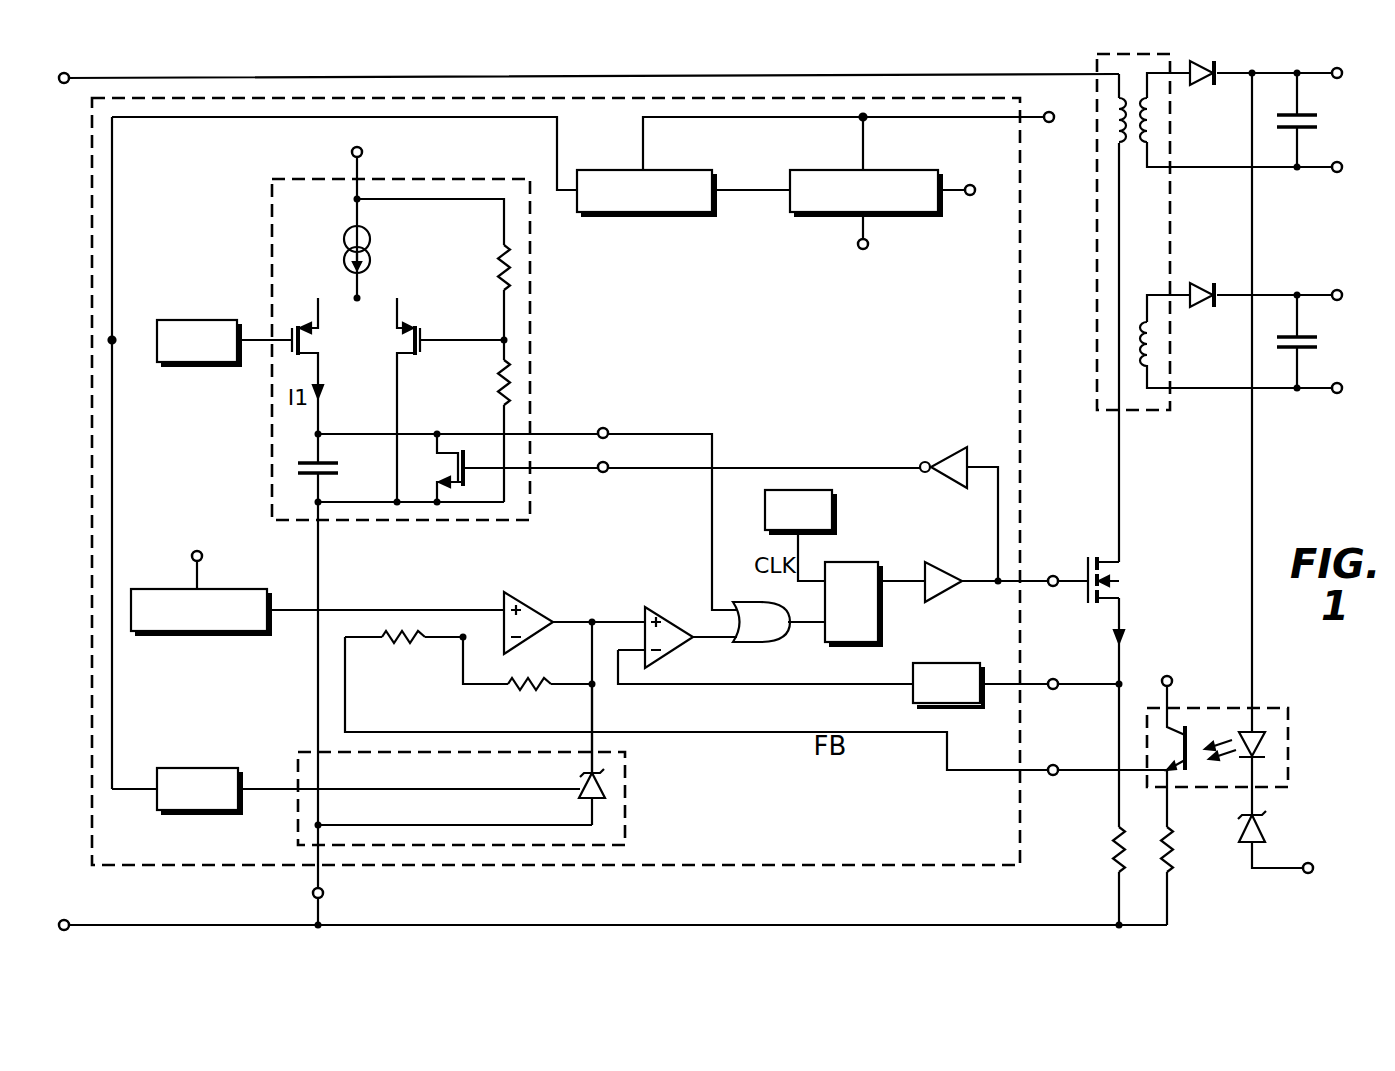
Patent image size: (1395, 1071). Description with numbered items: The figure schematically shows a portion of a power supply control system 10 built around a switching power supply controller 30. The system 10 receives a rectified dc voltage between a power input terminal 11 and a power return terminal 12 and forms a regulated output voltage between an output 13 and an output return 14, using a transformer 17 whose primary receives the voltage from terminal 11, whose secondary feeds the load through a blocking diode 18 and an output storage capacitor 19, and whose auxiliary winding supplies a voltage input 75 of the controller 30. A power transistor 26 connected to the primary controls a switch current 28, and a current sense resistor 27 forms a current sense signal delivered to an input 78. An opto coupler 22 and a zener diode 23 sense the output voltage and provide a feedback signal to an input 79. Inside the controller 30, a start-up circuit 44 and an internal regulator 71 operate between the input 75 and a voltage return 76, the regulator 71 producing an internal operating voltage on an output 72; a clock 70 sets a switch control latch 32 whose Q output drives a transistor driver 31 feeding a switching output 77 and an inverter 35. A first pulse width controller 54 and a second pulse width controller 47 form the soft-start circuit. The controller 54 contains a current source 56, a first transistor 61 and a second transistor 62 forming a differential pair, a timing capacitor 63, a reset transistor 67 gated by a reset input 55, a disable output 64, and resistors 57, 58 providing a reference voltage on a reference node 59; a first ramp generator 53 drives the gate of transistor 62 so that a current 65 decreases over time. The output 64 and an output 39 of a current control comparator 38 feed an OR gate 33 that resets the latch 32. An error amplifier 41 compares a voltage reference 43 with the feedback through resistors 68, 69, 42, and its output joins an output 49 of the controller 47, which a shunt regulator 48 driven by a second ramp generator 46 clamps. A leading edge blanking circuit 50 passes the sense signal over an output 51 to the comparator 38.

The power supply control system 10 is at (1318, 499).
The power input terminal 11 is at (64, 84).
The power return terminal 12 is at (64, 920).
The output 13 is at (1343, 73).
The output return 14 is at (1343, 167).
The transformer 17 is at (1170, 220).
The blocking diode 18 is at (1203, 90).
The output storage capacitor 19 is at (1320, 121).
The opto coupler 22 is at (1288, 733).
The zener diode 23 is at (1244, 842).
The power transistor 26 is at (1124, 574).
The current sense resistor 27 is at (1112, 851).
The switch current 28 is at (1123, 640).
The switching power supply controller 30 is at (1020, 330).
The transistor driver 31 is at (945, 572).
The switch control latch 32 is at (862, 562).
The OR gate 33 is at (776, 640).
The inverter 35 is at (948, 452).
The current control comparator 38 is at (666, 616).
The output of comparator 39 is at (712, 645).
The error amplifier 41 is at (530, 608).
The resistor 42 is at (1178, 850).
The voltage reference 43 is at (197, 635).
The start-up circuit 44 is at (645, 216).
The second ramp generator 46 is at (197, 767).
The second pulse width controller 47 is at (625, 825).
The shunt regulator 48 is at (605, 785).
The output of second pulse width controller 49 is at (594, 708).
The leading edge blanking circuit 50 is at (955, 663).
The output of LEB 51 is at (750, 690).
The first ramp generator 53 is at (197, 319).
The first pulse width controller 54 is at (272, 228).
The reset input 55 is at (603, 473).
The current source 56 is at (372, 250).
The resistor 57 is at (497, 256).
The resistor 58 is at (496, 406).
The reference node 59 is at (497, 345).
The first transistor 61 is at (422, 324).
The second transistor 62 is at (292, 322).
The timing capacitor 63 is at (340, 470).
The disable output 64 is at (603, 427).
The current 65 is at (322, 392).
The reset transistor 67 is at (438, 468).
The resistor 68 is at (548, 681).
The resistor 69 is at (398, 646).
The clock 70 is at (765, 513).
The internal regulator 71 is at (820, 169).
The output of regulator 72 is at (363, 152).
The voltage input 75 is at (1049, 123).
The voltage return 76 is at (863, 250).
The switching output 77 is at (1053, 575).
The input 78 is at (1053, 678).
The input 79 is at (1053, 776).